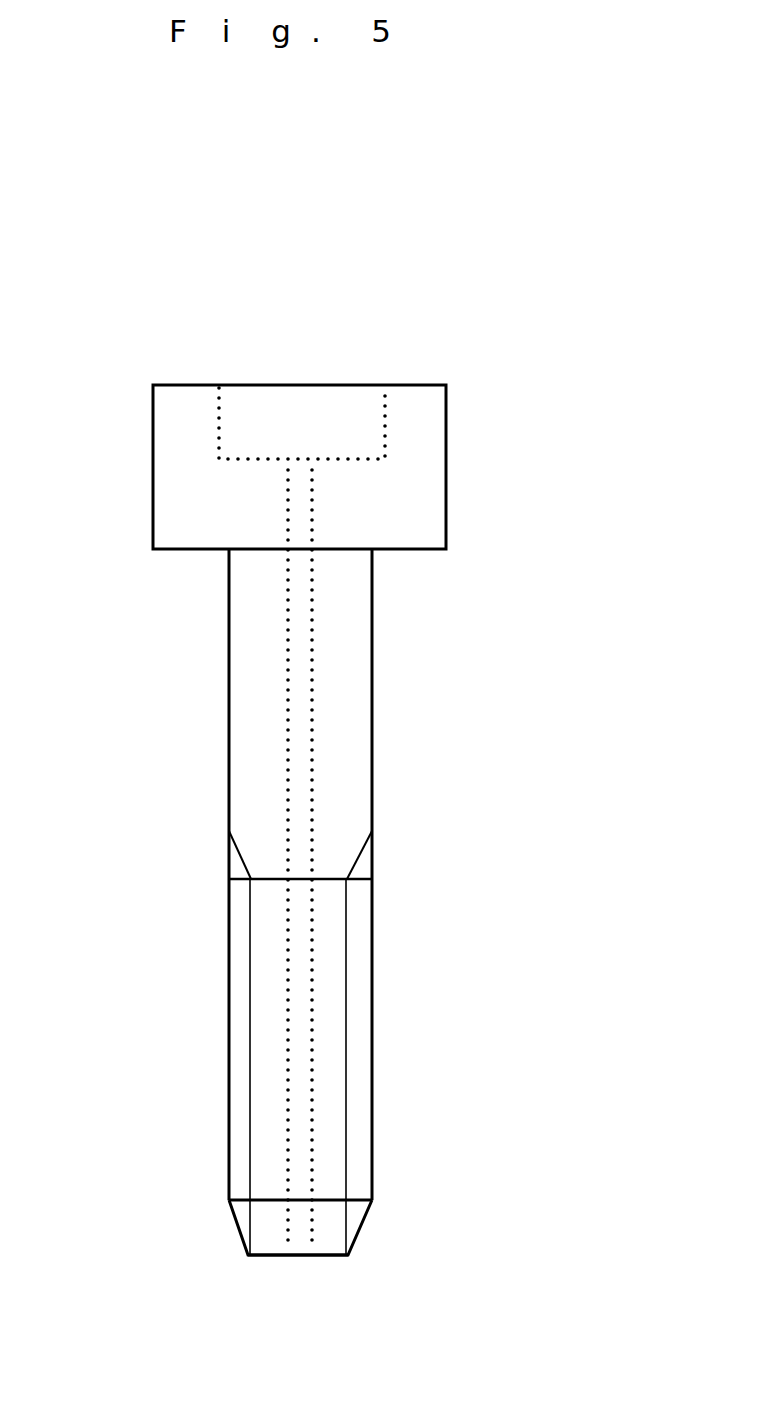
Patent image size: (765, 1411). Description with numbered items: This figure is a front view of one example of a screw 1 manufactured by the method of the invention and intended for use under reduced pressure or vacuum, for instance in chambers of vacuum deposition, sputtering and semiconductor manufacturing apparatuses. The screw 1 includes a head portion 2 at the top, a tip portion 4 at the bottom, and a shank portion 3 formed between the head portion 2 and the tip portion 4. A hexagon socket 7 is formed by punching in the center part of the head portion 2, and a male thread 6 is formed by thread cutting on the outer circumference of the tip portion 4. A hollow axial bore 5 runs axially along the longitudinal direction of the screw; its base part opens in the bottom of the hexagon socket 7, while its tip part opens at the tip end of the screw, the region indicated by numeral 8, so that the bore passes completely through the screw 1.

The screw 1 is at (493, 268).
The head portion 2 is at (405, 473).
The shank portion 3 is at (342, 728).
The tip portion 4 is at (333, 1023).
The hollow axial bore 5 is at (231, 1272).
The male thread 6 is at (243, 1112).
The hexagon socket 7 is at (246, 407).
The chamfered end face 8 is at (330, 1257).